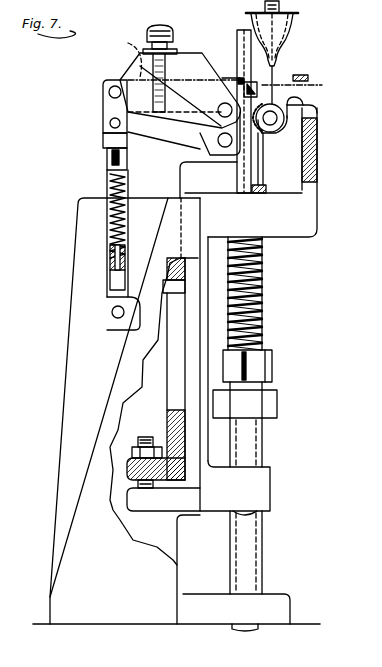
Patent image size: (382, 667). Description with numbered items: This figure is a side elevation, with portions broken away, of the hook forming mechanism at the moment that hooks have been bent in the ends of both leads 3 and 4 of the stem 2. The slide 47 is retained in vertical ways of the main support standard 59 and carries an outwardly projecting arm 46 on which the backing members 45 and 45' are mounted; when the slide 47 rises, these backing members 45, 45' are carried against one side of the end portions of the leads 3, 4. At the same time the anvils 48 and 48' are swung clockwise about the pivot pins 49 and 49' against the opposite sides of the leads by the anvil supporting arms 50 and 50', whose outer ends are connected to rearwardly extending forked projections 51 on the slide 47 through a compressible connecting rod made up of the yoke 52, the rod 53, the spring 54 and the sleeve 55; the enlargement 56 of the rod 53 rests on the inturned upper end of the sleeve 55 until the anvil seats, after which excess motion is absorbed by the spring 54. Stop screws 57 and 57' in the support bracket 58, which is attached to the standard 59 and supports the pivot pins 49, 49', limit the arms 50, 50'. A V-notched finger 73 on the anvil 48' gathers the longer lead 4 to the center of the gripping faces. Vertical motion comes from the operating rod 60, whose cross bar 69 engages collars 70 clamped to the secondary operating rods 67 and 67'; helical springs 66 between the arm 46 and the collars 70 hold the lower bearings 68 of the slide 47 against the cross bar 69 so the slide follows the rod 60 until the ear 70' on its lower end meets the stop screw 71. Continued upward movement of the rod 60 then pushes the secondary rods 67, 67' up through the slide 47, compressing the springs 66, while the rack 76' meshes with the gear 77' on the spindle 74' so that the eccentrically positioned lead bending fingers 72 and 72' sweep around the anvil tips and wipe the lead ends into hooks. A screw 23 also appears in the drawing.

The stem 2 is at (281, 38).
The lead 3 is at (275, 72).
The longer lead 4 is at (310, 82).
The screw 23 is at (190, 3).
The backing member 45 is at (302, 67).
The backing member 45' is at (315, 98).
The outwardly projecting arm 46 is at (318, 186).
The slide 47 is at (208, 318).
The anvil 48 is at (215, 110).
The anvil 48' is at (228, 70).
The pivot pin 49 is at (210, 142).
The pivot pin 49' is at (220, 147).
The anvil supporting arm 50 is at (166, 81).
The anvil supporting arm 50' is at (164, 154).
The forked projection 51 is at (128, 322).
The yoke 52 is at (103, 107).
The rod 53 is at (103, 142).
The spring 54 is at (110, 186).
The sleeve 55 is at (107, 222).
The enlargement 56 is at (107, 165).
The stop screw 57 is at (146, 65).
The stop screw 57' is at (129, 57).
The support bracket 58 is at (200, 53).
The main support standard 59 is at (117, 370).
The operating rod 60 is at (262, 426).
The helical spring 66 is at (262, 268).
The secondary operating rod 67 is at (289, 392).
The secondary operating rod 67' is at (271, 184).
The lower bearing 68 is at (271, 492).
The cross bar 69 is at (278, 405).
The collar 70 is at (269, 366).
The ear 70' is at (147, 509).
The stop screw 71 is at (146, 437).
The lead bending finger 72 is at (234, 68).
The lead bending finger 72' is at (301, 138).
The finger 73 is at (300, 86).
The spindle 74' is at (300, 122).
The rack 76' is at (271, 159).
The gear 77' is at (272, 132).